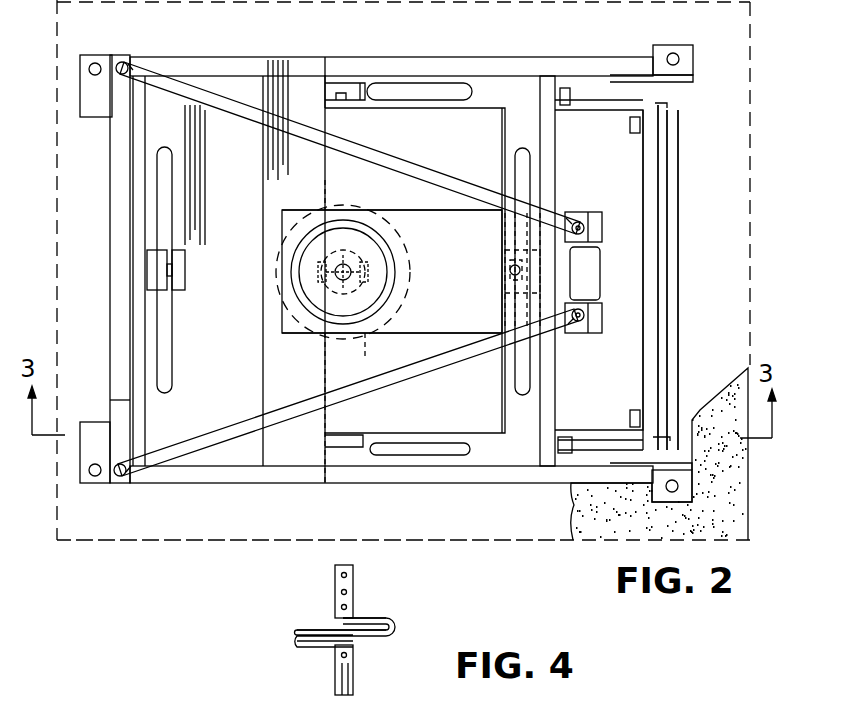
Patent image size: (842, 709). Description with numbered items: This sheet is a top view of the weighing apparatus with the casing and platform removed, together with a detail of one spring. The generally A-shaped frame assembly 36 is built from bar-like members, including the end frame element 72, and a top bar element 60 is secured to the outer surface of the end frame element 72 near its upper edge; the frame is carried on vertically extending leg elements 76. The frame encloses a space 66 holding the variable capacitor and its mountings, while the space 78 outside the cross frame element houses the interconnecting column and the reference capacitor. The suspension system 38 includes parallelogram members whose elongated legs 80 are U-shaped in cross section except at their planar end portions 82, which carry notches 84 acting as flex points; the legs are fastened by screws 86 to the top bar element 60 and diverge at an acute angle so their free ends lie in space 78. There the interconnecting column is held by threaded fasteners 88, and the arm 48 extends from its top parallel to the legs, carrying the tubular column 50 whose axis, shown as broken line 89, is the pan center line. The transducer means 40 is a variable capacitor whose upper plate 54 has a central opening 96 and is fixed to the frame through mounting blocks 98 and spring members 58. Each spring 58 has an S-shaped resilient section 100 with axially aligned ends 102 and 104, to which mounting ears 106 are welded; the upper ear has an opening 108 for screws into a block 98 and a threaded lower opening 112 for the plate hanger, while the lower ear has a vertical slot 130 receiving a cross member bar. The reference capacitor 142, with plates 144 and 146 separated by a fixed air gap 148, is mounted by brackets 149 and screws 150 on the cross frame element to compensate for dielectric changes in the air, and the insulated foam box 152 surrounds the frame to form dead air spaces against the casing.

In FIG. 2, the frame assembly 36 is at (387, 483).
In FIG. 2, the suspension system 38 is at (424, 90).
In FIG. 2, the displacement responsive transducer means 40 is at (383, 137).
In FIG. 2, the arm 48 is at (600, 212).
In FIG. 2, the tubular column 50 is at (398, 288).
In FIG. 2, the upper plate 54 is at (483, 433).
In FIG. 2, the spring members 58 is at (168, 350).
In FIG. 4, the spring members 58 is at (395, 620).
In FIG. 2, the top bar element 60 is at (118, 399).
In FIG. 2, the space 66 is at (185, 128).
In FIG. 2, the end frame element 72 is at (130, 335).
In FIG. 2, the leg elements 76 is at (105, 110).
In FIG. 2, the space 78 is at (630, 359).
In FIG. 2, the elongated legs 80 is at (425, 173).
In FIG. 2, the end portions 82 is at (584, 222).
In FIG. 2, the notches 84 is at (135, 64).
In FIG. 2, the screws 86 is at (122, 62).
In FIG. 2, the threaded fasteners 88 is at (584, 230).
In FIG. 2, the broken line 89 is at (376, 333).
In FIG. 2, the central opening 96 is at (410, 236).
In FIG. 2, the mounting block 98 is at (147, 270).
In FIG. 4, the S-shaped resilient section 100 is at (387, 640).
In FIG. 4, the end 102 is at (340, 619).
In FIG. 4, the end 104 is at (360, 645).
In FIG. 4, the mounting ear 106 is at (355, 572).
In FIG. 4, the opening 108 is at (343, 575).
In FIG. 4, the lower opening 112 is at (343, 607).
In FIG. 4, the vertical slot 130 is at (350, 680).
In FIG. 2, the reference capacitor 142 is at (682, 326).
In FIG. 2, the plate 144 is at (650, 372).
In FIG. 2, the plate 146 is at (673, 346).
In FIG. 2, the fixed air gap 148 is at (665, 273).
In FIG. 2, the brackets 149 is at (640, 127).
In FIG. 2, the screws 150 is at (573, 92).
In FIG. 2, the insulated foam box 152 is at (625, 530).